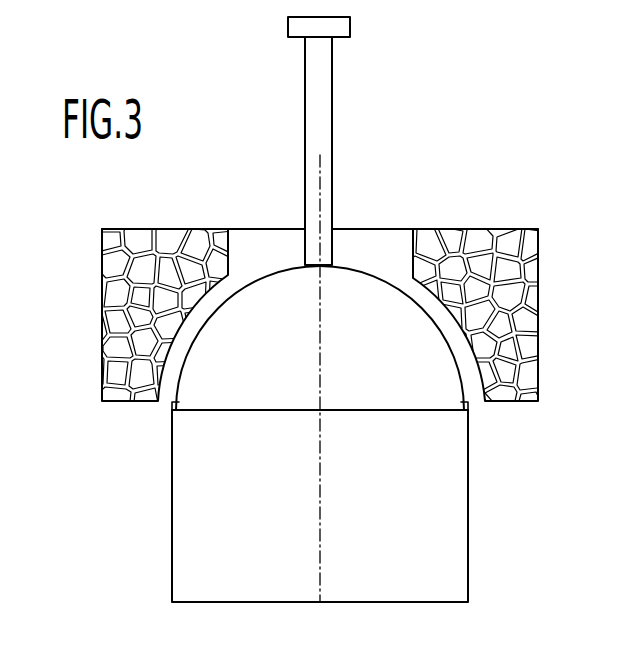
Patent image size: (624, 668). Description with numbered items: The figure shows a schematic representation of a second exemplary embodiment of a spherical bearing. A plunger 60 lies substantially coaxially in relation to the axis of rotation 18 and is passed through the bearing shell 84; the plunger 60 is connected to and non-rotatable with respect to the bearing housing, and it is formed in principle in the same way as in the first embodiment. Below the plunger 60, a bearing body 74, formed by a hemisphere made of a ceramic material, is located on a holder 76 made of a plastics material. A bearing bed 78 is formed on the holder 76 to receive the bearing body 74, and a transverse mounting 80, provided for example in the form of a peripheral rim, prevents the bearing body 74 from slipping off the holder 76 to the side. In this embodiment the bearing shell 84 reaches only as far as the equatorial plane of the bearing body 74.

The plunger 60 is at (312, 87).
The axis of rotation 18 is at (318, 165).
The bearing shell 84 is at (118, 278).
The bearing body 74 is at (373, 338).
The bearing bed 78 is at (260, 410).
The transverse mounting 80 is at (470, 406).
The holder 76 is at (190, 494).